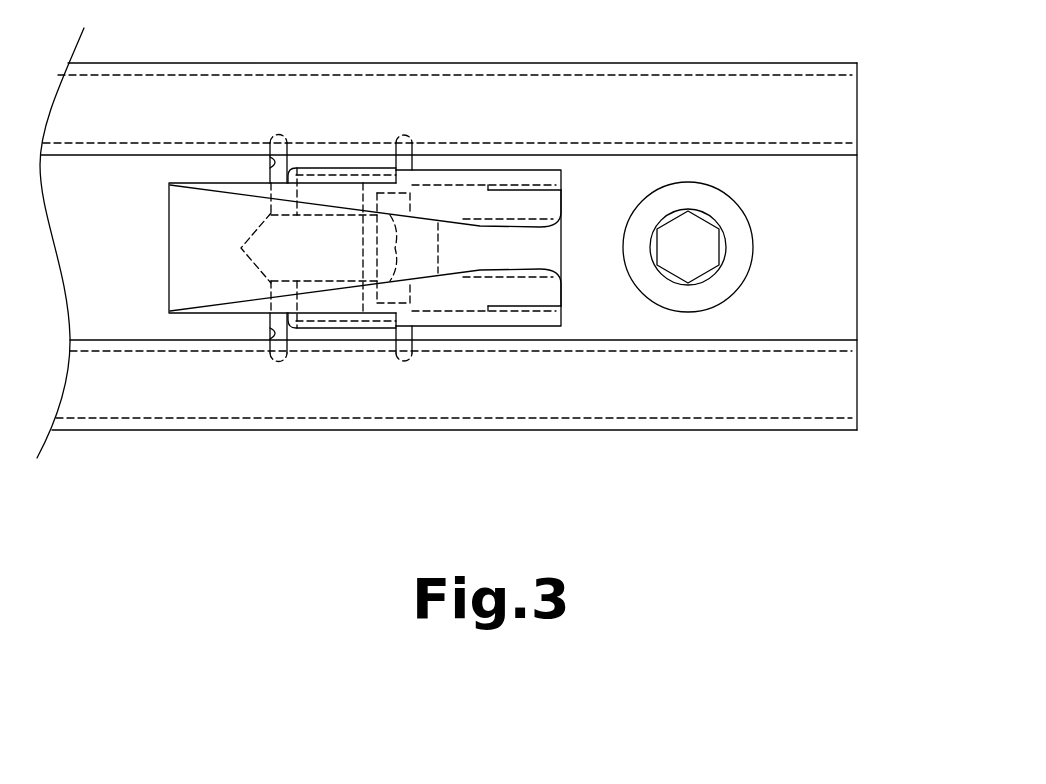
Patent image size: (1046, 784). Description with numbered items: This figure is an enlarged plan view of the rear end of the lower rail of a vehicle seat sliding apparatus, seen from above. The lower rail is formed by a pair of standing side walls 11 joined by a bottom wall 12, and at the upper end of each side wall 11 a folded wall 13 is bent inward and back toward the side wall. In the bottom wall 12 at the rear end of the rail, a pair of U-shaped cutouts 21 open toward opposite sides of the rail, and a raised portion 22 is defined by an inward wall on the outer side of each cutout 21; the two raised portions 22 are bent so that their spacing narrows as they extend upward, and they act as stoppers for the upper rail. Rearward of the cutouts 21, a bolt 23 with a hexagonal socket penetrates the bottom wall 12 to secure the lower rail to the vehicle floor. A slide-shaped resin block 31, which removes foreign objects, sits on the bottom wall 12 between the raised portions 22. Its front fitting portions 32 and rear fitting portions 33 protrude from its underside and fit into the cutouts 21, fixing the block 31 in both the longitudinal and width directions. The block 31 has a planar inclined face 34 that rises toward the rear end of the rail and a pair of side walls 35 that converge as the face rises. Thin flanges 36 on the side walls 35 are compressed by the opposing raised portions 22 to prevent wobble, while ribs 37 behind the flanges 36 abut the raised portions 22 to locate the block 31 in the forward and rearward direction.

The side wall 11 is at (648, 60).
The bottom wall 12 is at (480, 248).
The folded wall 13 is at (800, 158).
The cutout 21 is at (270, 160).
The raised portion 22 is at (333, 183).
The bolt 23 is at (704, 249).
The block 31 is at (548, 246).
The fitting portion 32 is at (241, 248).
The fitting portion 33 is at (410, 290).
The inclined face 34 is at (187, 279).
The side wall 35 is at (497, 208).
The thin flange 36 is at (338, 168).
The rib 37 is at (494, 168).